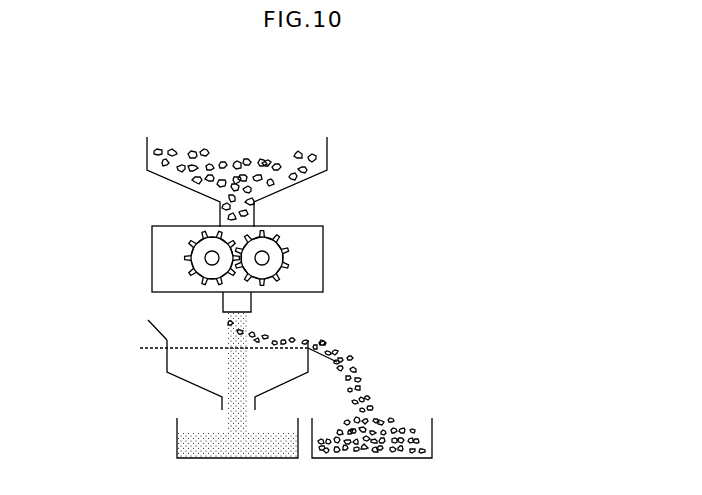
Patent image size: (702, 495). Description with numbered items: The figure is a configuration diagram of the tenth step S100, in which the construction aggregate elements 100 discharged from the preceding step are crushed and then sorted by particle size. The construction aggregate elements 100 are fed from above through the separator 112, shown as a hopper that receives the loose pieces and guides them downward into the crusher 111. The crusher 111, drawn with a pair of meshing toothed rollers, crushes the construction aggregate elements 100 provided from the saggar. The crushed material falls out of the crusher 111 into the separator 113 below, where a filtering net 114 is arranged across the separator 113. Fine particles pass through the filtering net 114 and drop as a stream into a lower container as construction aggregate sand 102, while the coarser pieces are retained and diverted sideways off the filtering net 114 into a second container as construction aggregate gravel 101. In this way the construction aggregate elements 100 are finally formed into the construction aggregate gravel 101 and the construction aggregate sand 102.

The tenth step S100 is at (440, 166).
The construction aggregate elements 100 is at (237, 163).
The separator 112 is at (327, 150).
The crusher 111 is at (323, 258).
The separator 113 is at (180, 378).
The filtering net 114 is at (195, 354).
The construction aggregate sand 102 is at (177, 444).
The construction aggregate gravel 101 is at (350, 359).